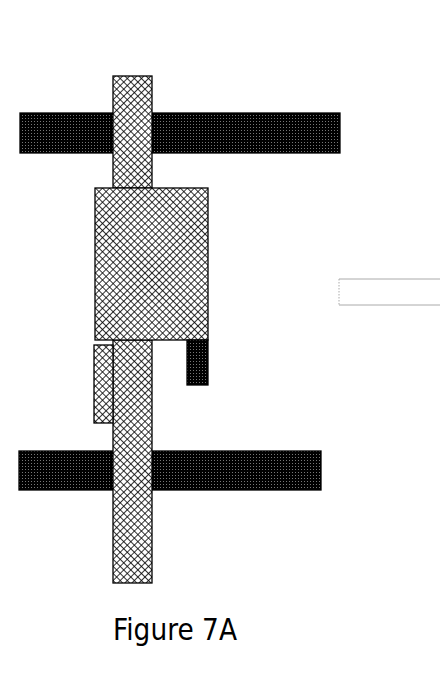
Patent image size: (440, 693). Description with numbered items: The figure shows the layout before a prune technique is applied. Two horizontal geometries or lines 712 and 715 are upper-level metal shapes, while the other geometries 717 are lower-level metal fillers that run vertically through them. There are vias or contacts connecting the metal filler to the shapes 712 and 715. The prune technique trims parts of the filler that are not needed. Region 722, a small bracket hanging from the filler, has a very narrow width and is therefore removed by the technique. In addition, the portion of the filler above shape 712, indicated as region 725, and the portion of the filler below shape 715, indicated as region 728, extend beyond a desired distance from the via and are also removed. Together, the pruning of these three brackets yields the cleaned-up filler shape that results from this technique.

The metal-2 geometry 712 is at (283, 112).
The metal-2 geometry 715 is at (263, 451).
The metal-1 filler 717 is at (272, 232).
The narrow region 722 is at (208, 343).
The filler region above shape 712 725 is at (147, 92).
The filler region below shape 715 728 is at (147, 545).